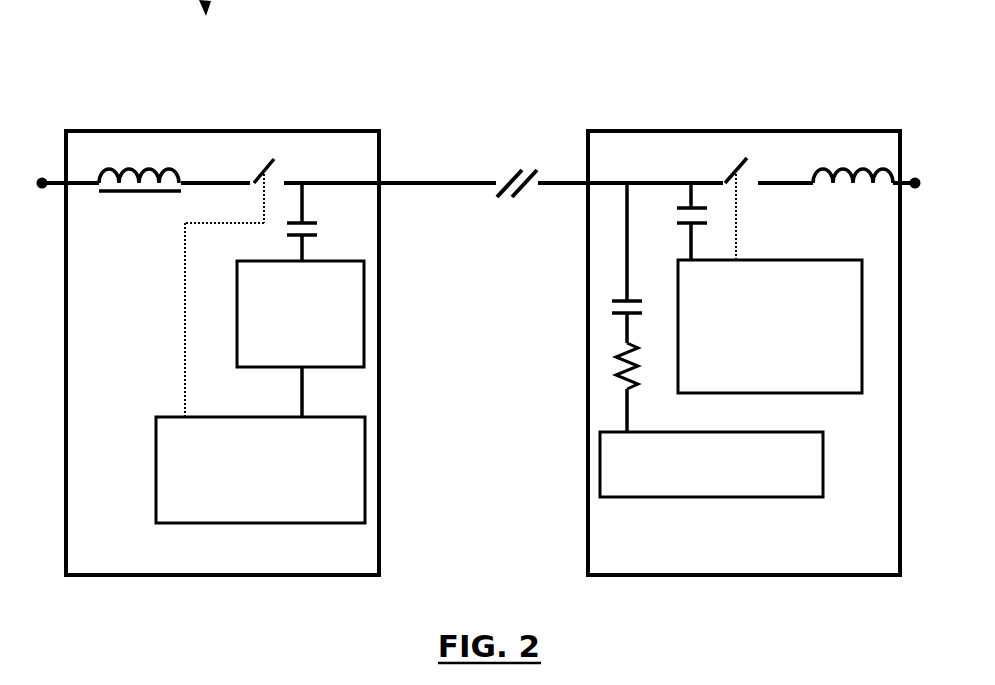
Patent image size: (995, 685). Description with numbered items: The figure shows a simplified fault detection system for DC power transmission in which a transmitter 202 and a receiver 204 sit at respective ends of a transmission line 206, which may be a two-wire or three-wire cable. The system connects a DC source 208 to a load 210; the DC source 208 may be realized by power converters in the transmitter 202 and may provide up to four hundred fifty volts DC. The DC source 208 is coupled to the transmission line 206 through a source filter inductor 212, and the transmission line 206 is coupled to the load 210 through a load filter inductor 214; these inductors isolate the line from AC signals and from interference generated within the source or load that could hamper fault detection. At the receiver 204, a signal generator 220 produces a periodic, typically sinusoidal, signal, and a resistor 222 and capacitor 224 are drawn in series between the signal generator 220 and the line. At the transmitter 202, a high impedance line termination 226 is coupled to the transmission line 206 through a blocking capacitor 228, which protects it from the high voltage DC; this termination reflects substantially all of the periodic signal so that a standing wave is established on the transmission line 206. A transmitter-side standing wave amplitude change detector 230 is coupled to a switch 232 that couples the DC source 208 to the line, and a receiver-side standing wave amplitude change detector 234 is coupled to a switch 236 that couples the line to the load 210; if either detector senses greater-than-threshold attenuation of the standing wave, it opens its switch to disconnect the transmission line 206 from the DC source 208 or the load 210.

The transmitter 202 is at (222, 130).
The receiver 204 is at (625, 130).
The transmission line 206 is at (465, 181).
The DC source 208 is at (42, 190).
The load 210 is at (915, 177).
The source filter inductor 212 is at (137, 222).
The load filter inductor 214 is at (853, 132).
The signal generator 220 is at (598, 465).
The resistor 222 is at (602, 338).
The coupling capacitor 224 is at (603, 288).
The line termination 226 is at (366, 310).
The blocking capacitor 228 is at (345, 231).
The transmitter-side standing wave amplitude change detector 230 is at (366, 469).
The switch 232 is at (306, 148).
The receiver-side standing wave amplitude change detector 234 is at (845, 396).
The switch 236 is at (702, 145).